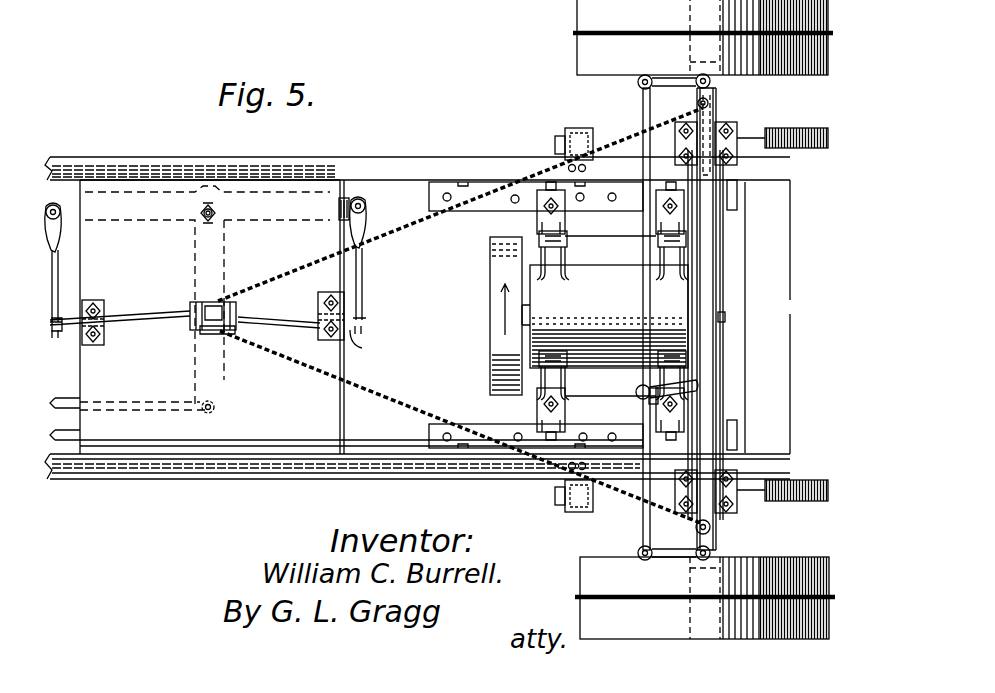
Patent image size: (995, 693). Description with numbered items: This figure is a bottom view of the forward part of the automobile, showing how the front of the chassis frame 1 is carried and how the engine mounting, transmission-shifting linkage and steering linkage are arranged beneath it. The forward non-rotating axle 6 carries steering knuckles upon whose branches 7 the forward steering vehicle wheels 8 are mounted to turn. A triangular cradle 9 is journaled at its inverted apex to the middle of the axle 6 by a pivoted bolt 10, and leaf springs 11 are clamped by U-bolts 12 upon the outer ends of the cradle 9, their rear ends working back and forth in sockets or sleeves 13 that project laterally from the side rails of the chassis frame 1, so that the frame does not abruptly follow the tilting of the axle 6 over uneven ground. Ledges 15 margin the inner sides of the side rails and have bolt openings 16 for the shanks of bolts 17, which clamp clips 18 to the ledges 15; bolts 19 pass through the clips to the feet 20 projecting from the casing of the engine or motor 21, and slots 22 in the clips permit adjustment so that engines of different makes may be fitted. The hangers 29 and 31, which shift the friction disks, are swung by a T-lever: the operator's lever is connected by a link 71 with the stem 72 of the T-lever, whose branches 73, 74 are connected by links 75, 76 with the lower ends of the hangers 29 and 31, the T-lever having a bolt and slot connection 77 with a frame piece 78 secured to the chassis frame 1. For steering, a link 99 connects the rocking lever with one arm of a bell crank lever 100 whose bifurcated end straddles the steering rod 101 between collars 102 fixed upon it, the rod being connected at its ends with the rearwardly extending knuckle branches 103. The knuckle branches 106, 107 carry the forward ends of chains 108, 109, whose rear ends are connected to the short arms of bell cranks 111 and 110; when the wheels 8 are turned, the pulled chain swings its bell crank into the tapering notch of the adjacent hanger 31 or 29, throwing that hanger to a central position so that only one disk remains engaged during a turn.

The chassis frame 1 is at (401, 163).
The forward non-rotating axle 6 is at (718, 290).
The steering knuckle branches 7 is at (690, 12).
The forward steering vehicle wheels 8 is at (577, 12).
The triangular cradle 9 is at (725, 242).
The pivoted bolt 10 is at (726, 318).
The leaf springs 11 is at (812, 135).
The U-bolts 12 is at (738, 137).
The sockets or sleeves 13 is at (578, 128).
The ledges 15 is at (429, 198).
The bolt openings 16 is at (514, 205).
The bolts 17 is at (558, 205).
The clips 18 is at (597, 234).
The bolts 19 is at (537, 228).
The feet 20 is at (659, 250).
The engine or motor 21 is at (589, 316).
The slots 22 is at (520, 178).
The hanger 29 is at (362, 302).
The hanger 31 is at (84, 300).
The link 71 is at (66, 398).
The stem of the T-lever 72 is at (225, 393).
The branch of the T-lever 73 is at (72, 200).
The branch of the T-lever 74 is at (345, 216).
The link 75 is at (62, 260).
The link 76 is at (366, 258).
The bolt and slot connection 77 is at (198, 212).
The frame piece 78 is at (342, 340).
The link 99 is at (68, 440).
The bell crank lever 100 is at (700, 385).
The steering rod 101 is at (641, 107).
The collars 102 is at (648, 400).
The rearwardly extending knuckle branches 103 is at (664, 80).
The knuckle branch 106 is at (712, 93).
The knuckle branch 107 is at (712, 533).
The chain or link 108 is at (422, 218).
The chain or link 109 is at (398, 407).
The bell crank 110 is at (280, 322).
The bell crank 111 is at (155, 312).